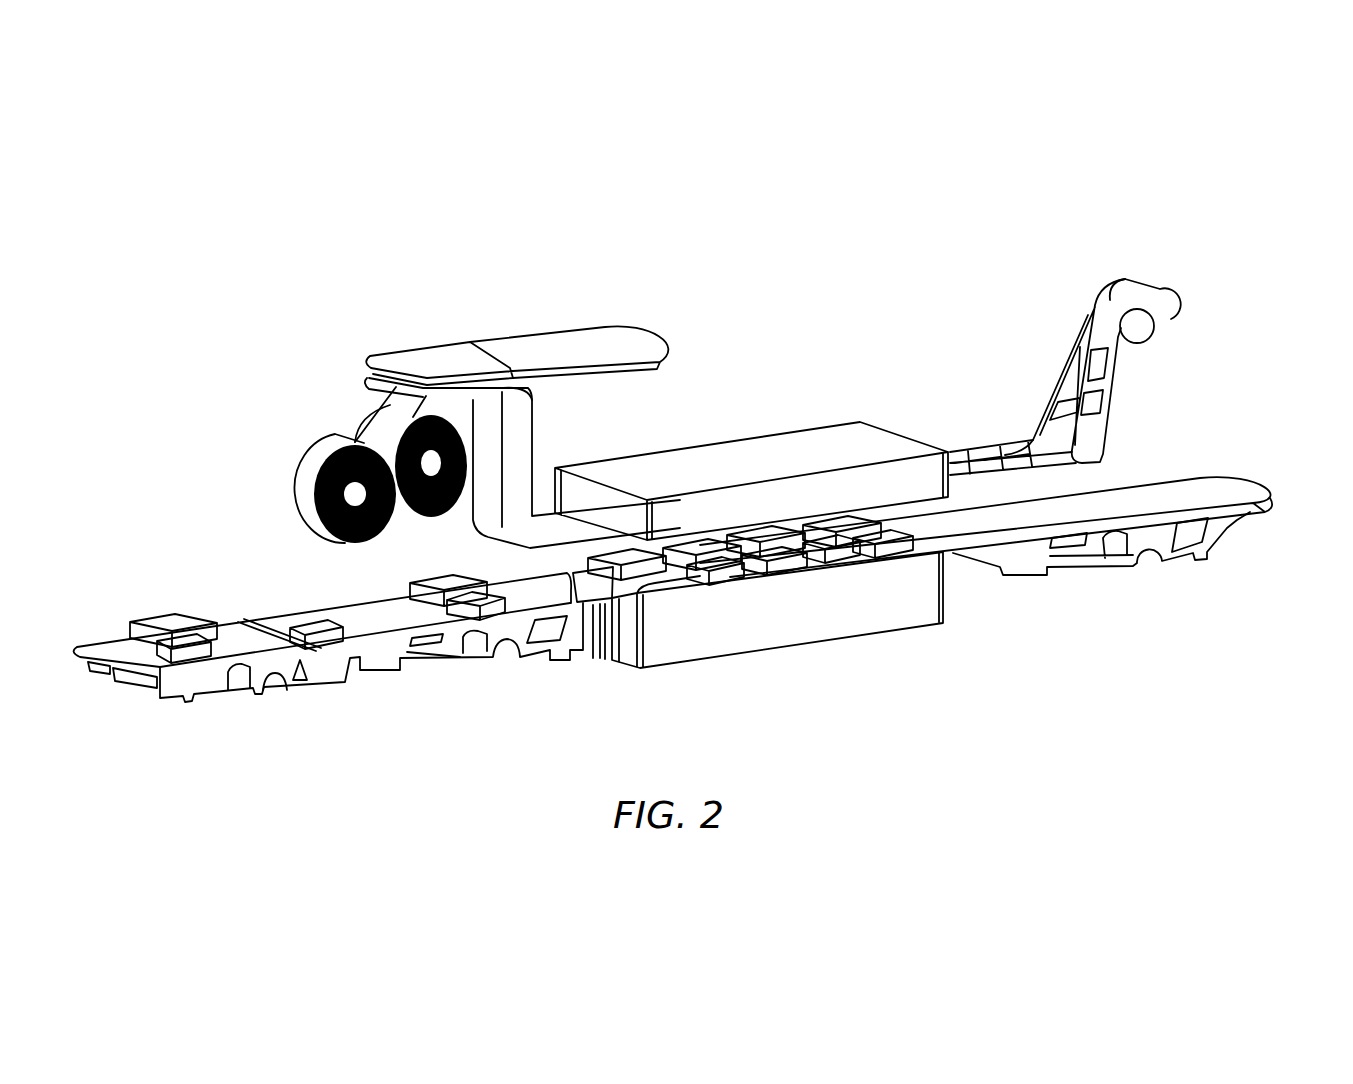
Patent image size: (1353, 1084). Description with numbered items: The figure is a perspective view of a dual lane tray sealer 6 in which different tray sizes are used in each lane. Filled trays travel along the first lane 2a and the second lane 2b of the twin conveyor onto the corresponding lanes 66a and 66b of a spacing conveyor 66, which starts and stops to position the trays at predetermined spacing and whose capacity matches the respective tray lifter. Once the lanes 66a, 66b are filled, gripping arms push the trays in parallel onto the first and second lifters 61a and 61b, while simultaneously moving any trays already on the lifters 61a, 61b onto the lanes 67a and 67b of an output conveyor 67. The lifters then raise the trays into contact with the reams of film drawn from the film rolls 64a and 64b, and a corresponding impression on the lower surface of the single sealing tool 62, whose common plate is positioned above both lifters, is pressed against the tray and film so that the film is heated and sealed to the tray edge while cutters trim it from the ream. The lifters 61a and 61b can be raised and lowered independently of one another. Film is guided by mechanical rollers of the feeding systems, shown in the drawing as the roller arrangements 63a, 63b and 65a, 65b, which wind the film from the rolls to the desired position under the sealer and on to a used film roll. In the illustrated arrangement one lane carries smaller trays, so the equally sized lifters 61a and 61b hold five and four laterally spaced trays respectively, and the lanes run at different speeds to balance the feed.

The tray sealer 6 is at (190, 332).
The first lane 2a is at (190, 661).
The second lane 2b is at (159, 626).
The first lifter 61a is at (629, 652).
The second lifter 61b is at (573, 653).
The sealing tool 62 is at (763, 450).
The bracket plate 63a is at (590, 345).
The bracket bar 63b is at (416, 355).
The film roll 64a is at (294, 500).
The film roll 64b is at (371, 426).
The support arm 65a is at (1100, 316).
The guide rollers 65b is at (1136, 284).
The spacing conveyor 66 is at (367, 590).
The lane of the spacing conveyor 66a is at (386, 634).
The lane of the spacing conveyor 66b is at (272, 625).
The output conveyor 67 is at (1259, 488).
The lane of the output conveyor 67a is at (1209, 504).
The lane of the output conveyor 67b is at (1173, 491).